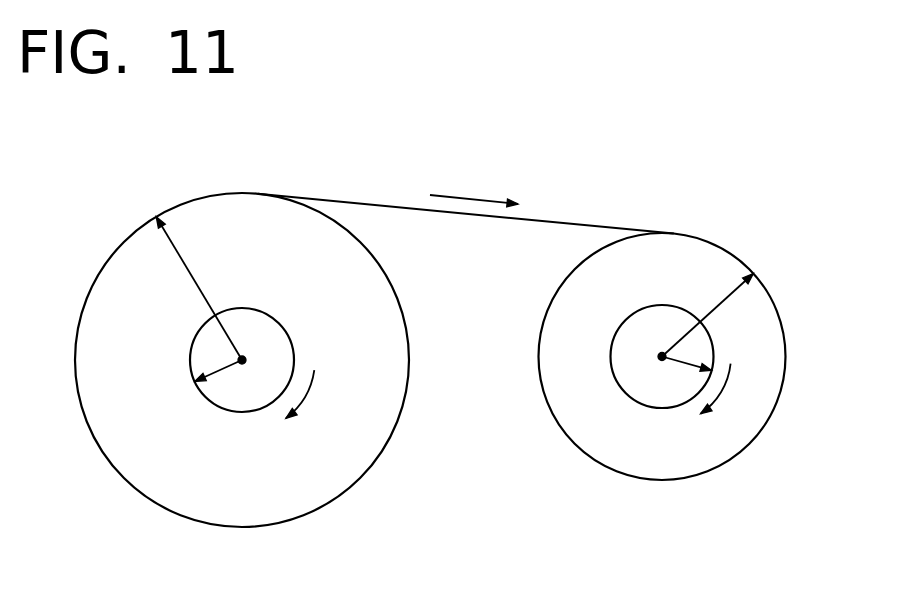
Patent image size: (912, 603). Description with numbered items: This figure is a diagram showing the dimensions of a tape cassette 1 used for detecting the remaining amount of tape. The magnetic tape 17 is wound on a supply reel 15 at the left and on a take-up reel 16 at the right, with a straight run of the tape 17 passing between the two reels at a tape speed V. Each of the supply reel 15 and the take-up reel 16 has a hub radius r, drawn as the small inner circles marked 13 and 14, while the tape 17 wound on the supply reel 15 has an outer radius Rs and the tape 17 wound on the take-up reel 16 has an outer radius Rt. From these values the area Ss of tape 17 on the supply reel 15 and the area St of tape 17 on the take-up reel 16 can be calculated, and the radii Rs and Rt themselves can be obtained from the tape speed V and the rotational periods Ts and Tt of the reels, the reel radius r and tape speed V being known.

The cassette 1 is at (603, 148).
The drive shaft 13 is at (265, 309).
The driven shaft 14 is at (675, 305).
The supply reel 15 is at (187, 203).
The take-up reel 16 is at (733, 253).
The magnetic tape 17 is at (333, 200).